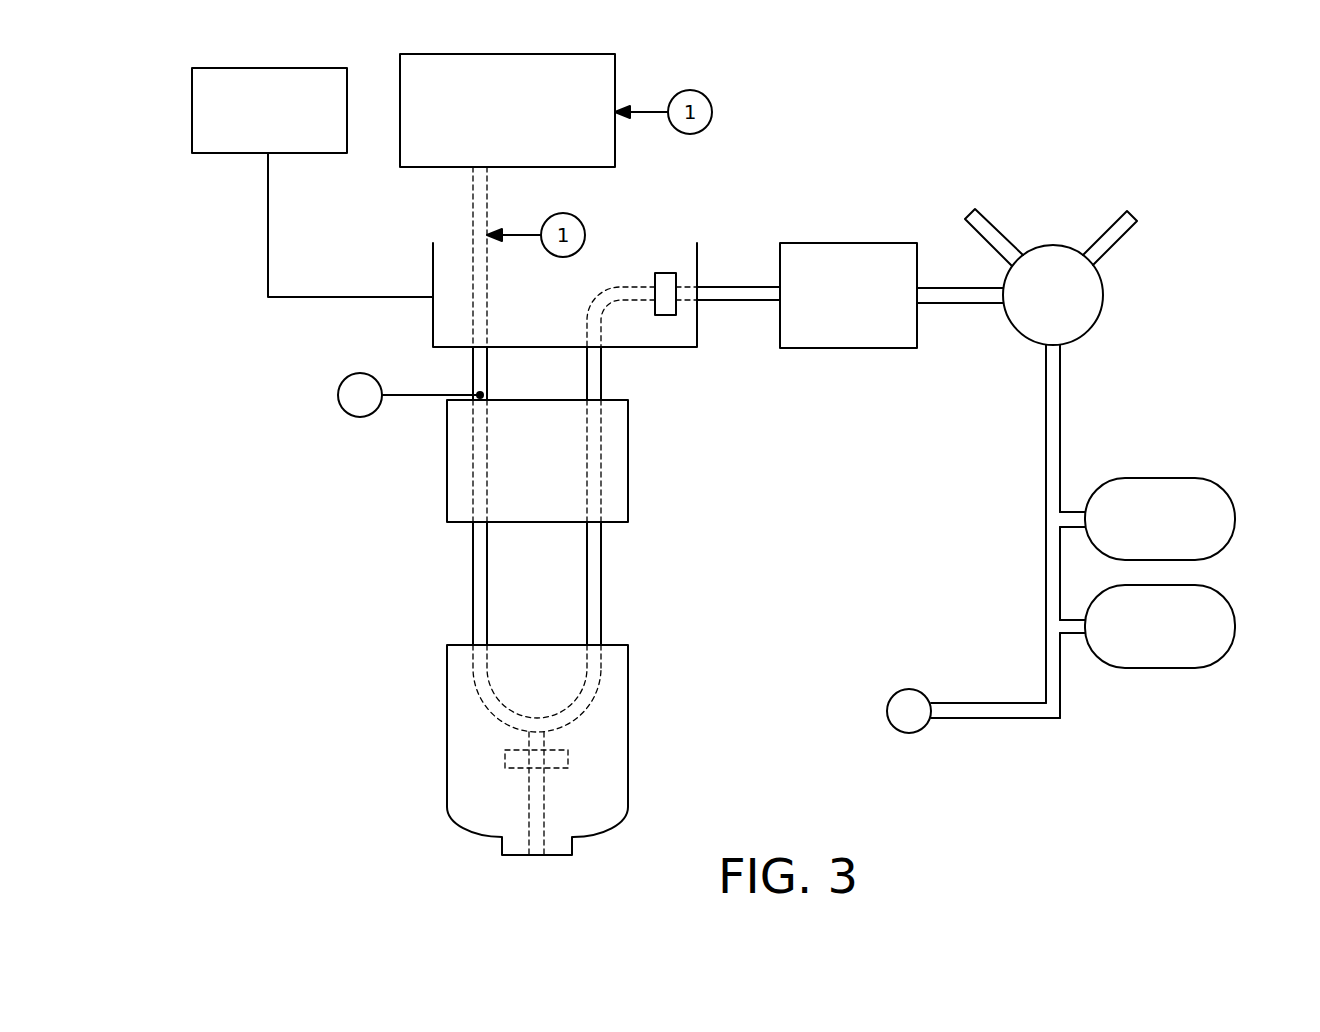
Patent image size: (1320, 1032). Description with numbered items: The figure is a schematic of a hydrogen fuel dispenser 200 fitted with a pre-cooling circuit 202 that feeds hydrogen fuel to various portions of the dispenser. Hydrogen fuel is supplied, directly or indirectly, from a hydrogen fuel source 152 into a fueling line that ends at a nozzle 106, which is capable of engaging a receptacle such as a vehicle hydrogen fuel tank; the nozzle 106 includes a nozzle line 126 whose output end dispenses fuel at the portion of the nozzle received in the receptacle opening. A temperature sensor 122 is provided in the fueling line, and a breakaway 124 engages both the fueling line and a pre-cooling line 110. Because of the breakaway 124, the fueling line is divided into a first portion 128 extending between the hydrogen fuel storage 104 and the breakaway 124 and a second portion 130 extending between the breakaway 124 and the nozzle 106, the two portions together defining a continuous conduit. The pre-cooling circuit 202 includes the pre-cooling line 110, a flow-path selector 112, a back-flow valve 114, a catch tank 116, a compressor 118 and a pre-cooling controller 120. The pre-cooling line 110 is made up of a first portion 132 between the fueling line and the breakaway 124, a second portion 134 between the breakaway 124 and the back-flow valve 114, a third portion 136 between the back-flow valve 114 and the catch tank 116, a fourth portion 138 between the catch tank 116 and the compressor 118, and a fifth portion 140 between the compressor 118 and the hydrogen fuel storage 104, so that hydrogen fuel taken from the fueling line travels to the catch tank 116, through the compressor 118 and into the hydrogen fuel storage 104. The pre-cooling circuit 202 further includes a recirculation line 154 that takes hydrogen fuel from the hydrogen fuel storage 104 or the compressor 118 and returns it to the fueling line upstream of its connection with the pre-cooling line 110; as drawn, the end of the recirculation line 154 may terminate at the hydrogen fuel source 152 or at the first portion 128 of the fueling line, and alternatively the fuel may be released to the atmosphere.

The hydrogen fuel storage 104 is at (1232, 545).
The nozzle 106 is at (447, 745).
The pre-cooling line 110 is at (601, 560).
The flow-path selector 112 is at (473, 570).
The back-flow valve 114 is at (667, 273).
The catch tank 116 is at (867, 348).
The compressor 118 is at (1093, 330).
The pre-cooling controller 120 is at (192, 100).
The temperature sensor 122 is at (343, 382).
The breakaway 124 is at (447, 492).
The nozzle line 126 is at (528, 825).
The first portion of fueling line 128 is at (473, 367).
The second portion of fueling line 130 is at (473, 608).
The first portion of pre-cooling line 132 is at (601, 608).
The second portion of pre-cooling line 134 is at (602, 365).
The third portion of pre-cooling line 136 is at (733, 285).
The fourth portion of pre-cooling line 138 is at (958, 304).
The fifth portion of pre-cooling line 140 is at (1046, 435).
The hydrogen fuel source 152 is at (617, 65).
The recirculation line 154 is at (1060, 698).
The hydrogen fuel dispenser 200 is at (185, 384).
The pre-cooling circuit 202 is at (840, 690).